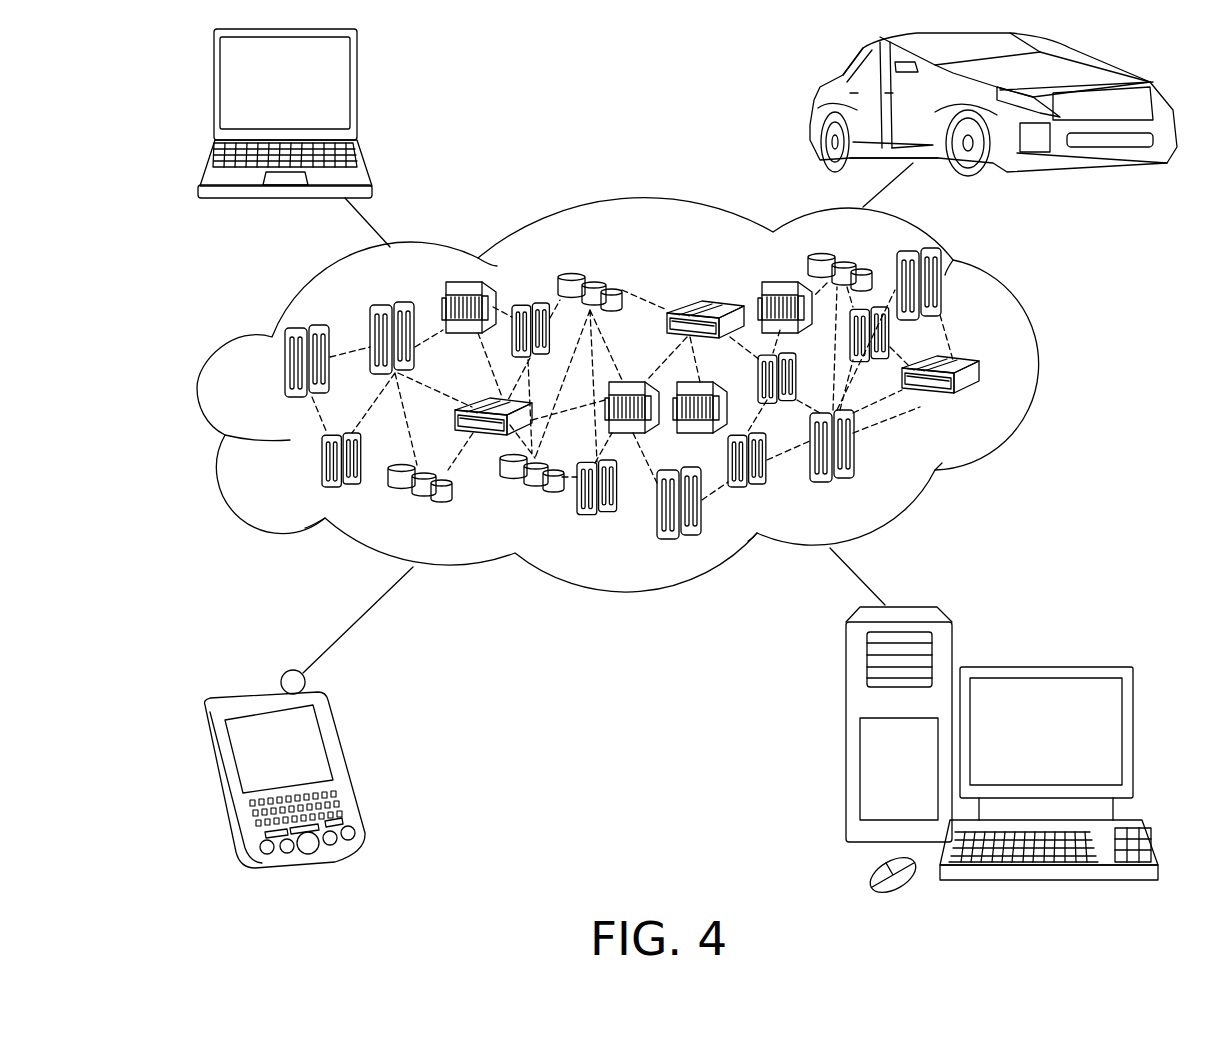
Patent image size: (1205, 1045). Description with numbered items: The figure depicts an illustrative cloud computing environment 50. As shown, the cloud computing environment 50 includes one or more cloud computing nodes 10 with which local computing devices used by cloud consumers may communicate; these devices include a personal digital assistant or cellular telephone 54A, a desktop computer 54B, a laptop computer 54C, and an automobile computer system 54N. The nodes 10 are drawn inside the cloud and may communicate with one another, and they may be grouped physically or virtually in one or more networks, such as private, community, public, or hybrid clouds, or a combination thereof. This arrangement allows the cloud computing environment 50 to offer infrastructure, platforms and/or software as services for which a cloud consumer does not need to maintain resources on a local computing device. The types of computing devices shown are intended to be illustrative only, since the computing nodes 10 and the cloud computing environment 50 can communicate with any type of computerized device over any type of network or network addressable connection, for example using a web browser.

The cloud computing node 10 is at (984, 402).
The cloud computing environment 50 is at (1040, 372).
The personal digital assistant or cellular telephone 54A is at (343, 760).
The desktop computer 54B is at (1043, 665).
The laptop computer 54C is at (358, 92).
The automobile computer system 54N is at (815, 108).